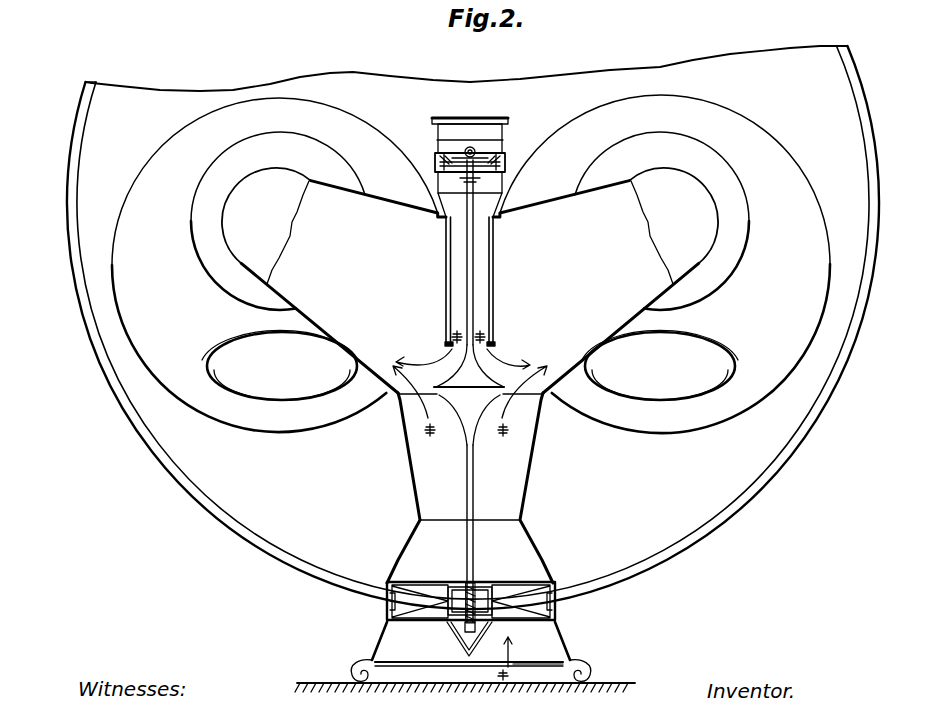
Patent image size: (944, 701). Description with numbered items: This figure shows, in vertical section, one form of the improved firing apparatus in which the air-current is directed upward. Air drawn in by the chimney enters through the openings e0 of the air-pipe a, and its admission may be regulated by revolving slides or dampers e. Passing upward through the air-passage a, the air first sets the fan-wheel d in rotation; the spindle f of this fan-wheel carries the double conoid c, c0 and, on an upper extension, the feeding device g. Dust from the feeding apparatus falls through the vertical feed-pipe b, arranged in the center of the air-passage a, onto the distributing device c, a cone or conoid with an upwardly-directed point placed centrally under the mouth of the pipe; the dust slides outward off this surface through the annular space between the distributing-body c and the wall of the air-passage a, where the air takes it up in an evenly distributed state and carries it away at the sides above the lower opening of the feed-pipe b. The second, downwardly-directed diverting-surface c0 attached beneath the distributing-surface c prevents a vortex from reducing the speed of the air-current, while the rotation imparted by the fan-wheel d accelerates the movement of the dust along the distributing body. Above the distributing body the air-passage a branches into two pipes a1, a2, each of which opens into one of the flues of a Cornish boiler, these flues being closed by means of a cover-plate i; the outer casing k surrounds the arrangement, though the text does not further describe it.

The outer casing k is at (643, 560).
The cover-plate i is at (347, 117).
The branch pipe a1 is at (318, 262).
The branch pipe a2 is at (621, 262).
The feed-pipe b is at (489, 263).
The feeding device g is at (498, 152).
The spindle f is at (470, 288).
The distributing device c is at (487, 373).
The downwardly-directed diverting-surface c0 is at (480, 416).
The air-passage a is at (532, 475).
The fan-wheel d is at (403, 590).
The revolving slides or dampers e is at (418, 667).
The openings e0 is at (513, 661).